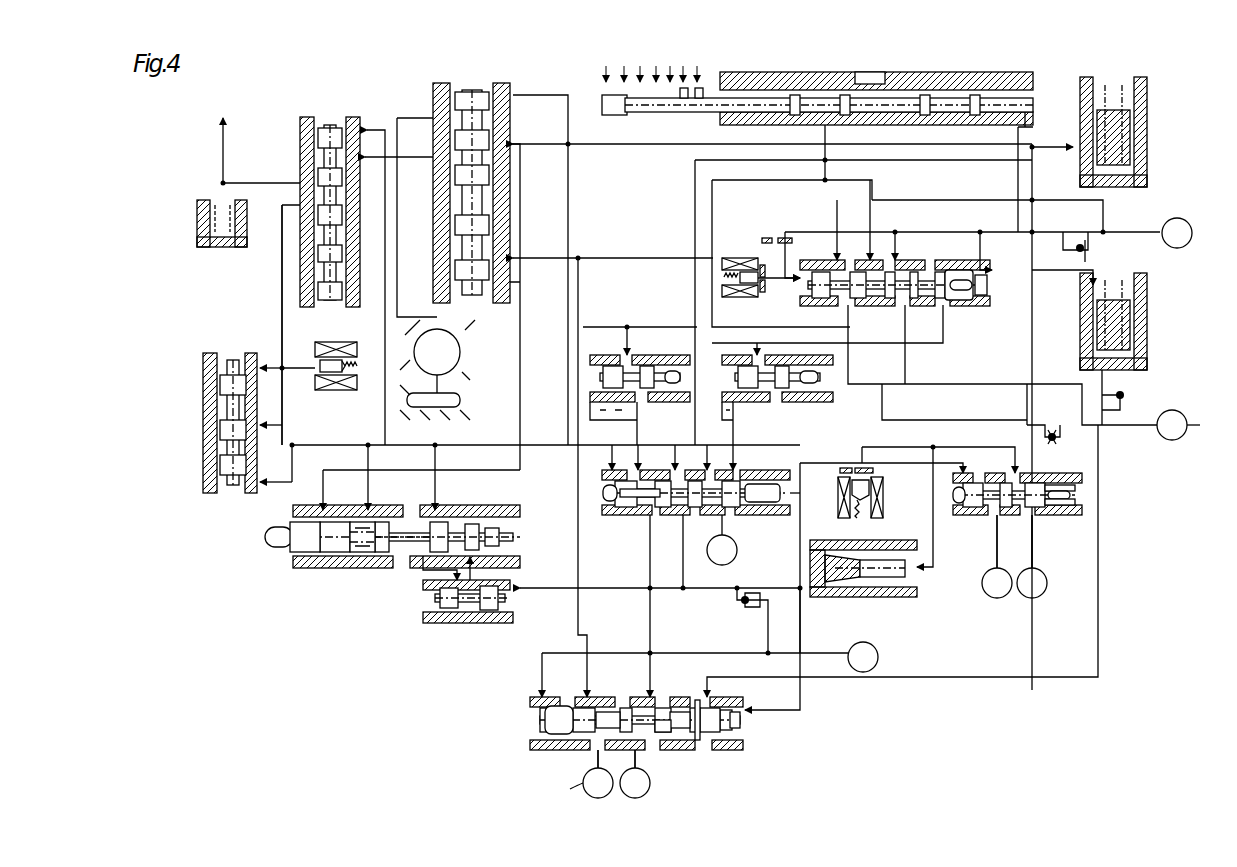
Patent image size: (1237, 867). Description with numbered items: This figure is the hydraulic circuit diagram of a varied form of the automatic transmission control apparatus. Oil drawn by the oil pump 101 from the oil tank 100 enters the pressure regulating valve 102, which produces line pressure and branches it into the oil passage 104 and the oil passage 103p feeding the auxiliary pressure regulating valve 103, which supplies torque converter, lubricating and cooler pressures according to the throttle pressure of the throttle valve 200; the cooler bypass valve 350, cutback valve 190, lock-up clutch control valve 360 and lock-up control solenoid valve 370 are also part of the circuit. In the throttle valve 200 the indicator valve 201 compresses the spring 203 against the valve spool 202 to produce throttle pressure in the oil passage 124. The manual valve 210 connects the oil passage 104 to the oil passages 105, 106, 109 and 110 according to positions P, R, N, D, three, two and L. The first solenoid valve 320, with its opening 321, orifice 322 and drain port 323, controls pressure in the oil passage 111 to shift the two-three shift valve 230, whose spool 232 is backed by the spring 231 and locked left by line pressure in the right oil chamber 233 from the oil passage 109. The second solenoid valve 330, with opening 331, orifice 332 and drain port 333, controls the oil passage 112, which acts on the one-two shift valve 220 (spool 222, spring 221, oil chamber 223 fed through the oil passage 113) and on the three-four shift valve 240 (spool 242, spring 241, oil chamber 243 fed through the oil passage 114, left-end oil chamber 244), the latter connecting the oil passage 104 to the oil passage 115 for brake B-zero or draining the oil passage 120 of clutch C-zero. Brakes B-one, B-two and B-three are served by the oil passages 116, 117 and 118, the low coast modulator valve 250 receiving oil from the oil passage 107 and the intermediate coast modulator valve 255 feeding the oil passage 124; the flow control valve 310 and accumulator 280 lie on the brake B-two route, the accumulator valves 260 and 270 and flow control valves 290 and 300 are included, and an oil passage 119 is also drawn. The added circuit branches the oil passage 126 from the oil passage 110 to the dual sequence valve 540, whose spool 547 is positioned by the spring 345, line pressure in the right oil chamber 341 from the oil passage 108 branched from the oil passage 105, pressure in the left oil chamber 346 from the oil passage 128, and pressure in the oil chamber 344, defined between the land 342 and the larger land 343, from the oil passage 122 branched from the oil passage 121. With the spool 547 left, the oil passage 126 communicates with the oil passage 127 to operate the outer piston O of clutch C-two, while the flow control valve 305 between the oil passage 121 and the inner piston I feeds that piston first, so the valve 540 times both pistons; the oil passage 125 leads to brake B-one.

The oil tank 100 is at (420, 410).
The oil pump 101 is at (460, 365).
The pressure regulating valve 102 is at (455, 305).
The auxiliary pressure regulating valve 103 is at (312, 310).
The oil passage 103p is at (397, 140).
The oil passage 104 is at (625, 144).
The oil passage 105 is at (875, 162).
The oil passage 106 is at (900, 232).
The oil passage 107 is at (892, 384).
The oil passage 108 is at (800, 628).
The oil passage 109 is at (1022, 125).
The oil passage 110 is at (735, 180).
The oil passage 111 is at (795, 268).
The oil passage 112 is at (805, 463).
The oil passage 113 is at (583, 445).
The oil passage 114 is at (945, 384).
The oil passage 115 is at (995, 558).
The oil passage 116 is at (645, 588).
The oil passage 117 is at (680, 540).
The oil passage 118 is at (710, 550).
The passage 119 is at (1028, 202).
The oil passage 120 is at (1034, 558).
The oil passage 121 is at (915, 420).
The oil passage 122 is at (948, 677).
The oil passage 124 is at (368, 470).
The oil passage 125 is at (637, 760).
The oil passage 126 is at (578, 308).
The oil passage 127 is at (596, 760).
The oil passage 128 is at (660, 653).
The cutback valve 190 is at (428, 623).
The throttle valve 200 is at (298, 568).
The indicator valve 201 is at (298, 545).
The valve spool 202 is at (400, 556).
The spring 203 is at (350, 568).
The manual valve 210 is at (1020, 103).
The 1-2 shift valve 220 is at (745, 515).
The spring 221 is at (748, 484).
The spool 222 is at (640, 500).
The oil chamber 223 is at (612, 503).
The 2-3 shift valve 230 is at (810, 305).
The spring 231 is at (982, 275).
The spool 232 is at (952, 270).
The right oil chamber 233 is at (958, 300).
The 3-4 shift valve 240 is at (1052, 515).
The spring 241 is at (1075, 488).
The spool 242 is at (1072, 495).
The oil chamber 243 is at (1075, 503).
The left-end oil chamber 244 is at (958, 515).
The low coast modulator valve 250 is at (780, 395).
The intermediate coast modulator valve 255 is at (645, 395).
The accumulator valve 260 is at (1118, 190).
The accumulator valve 270 is at (1140, 318).
The accumulator valve 280 is at (865, 597).
The flow control valve 290 is at (1092, 252).
The flow control valve 300 is at (1124, 393).
The flow control valve 305 is at (1092, 414).
The flow control valve 310 is at (750, 605).
The first solenoid valve 320 is at (722, 297).
The opening 321 is at (778, 282).
The orifice 322 is at (778, 238).
The drain port 323 is at (760, 265).
The second solenoid valve 330 is at (858, 518).
The opening 331 is at (873, 470).
The orifice 332 is at (885, 447).
The drain port 333 is at (840, 472).
The right oil chamber 341 is at (740, 725).
The land 342 is at (715, 708).
The land 343 is at (668, 745).
The oil chamber 344 is at (688, 712).
The spring 345 is at (540, 735).
The left oil chamber 346 is at (555, 706).
The cooler bypass valve 350 is at (205, 247).
The lock-up clutch control valve 360 is at (208, 493).
The lock-up control solenoid valve 370 is at (318, 392).
The dual sequence valve 540 is at (712, 745).
The spool 547 is at (605, 712).